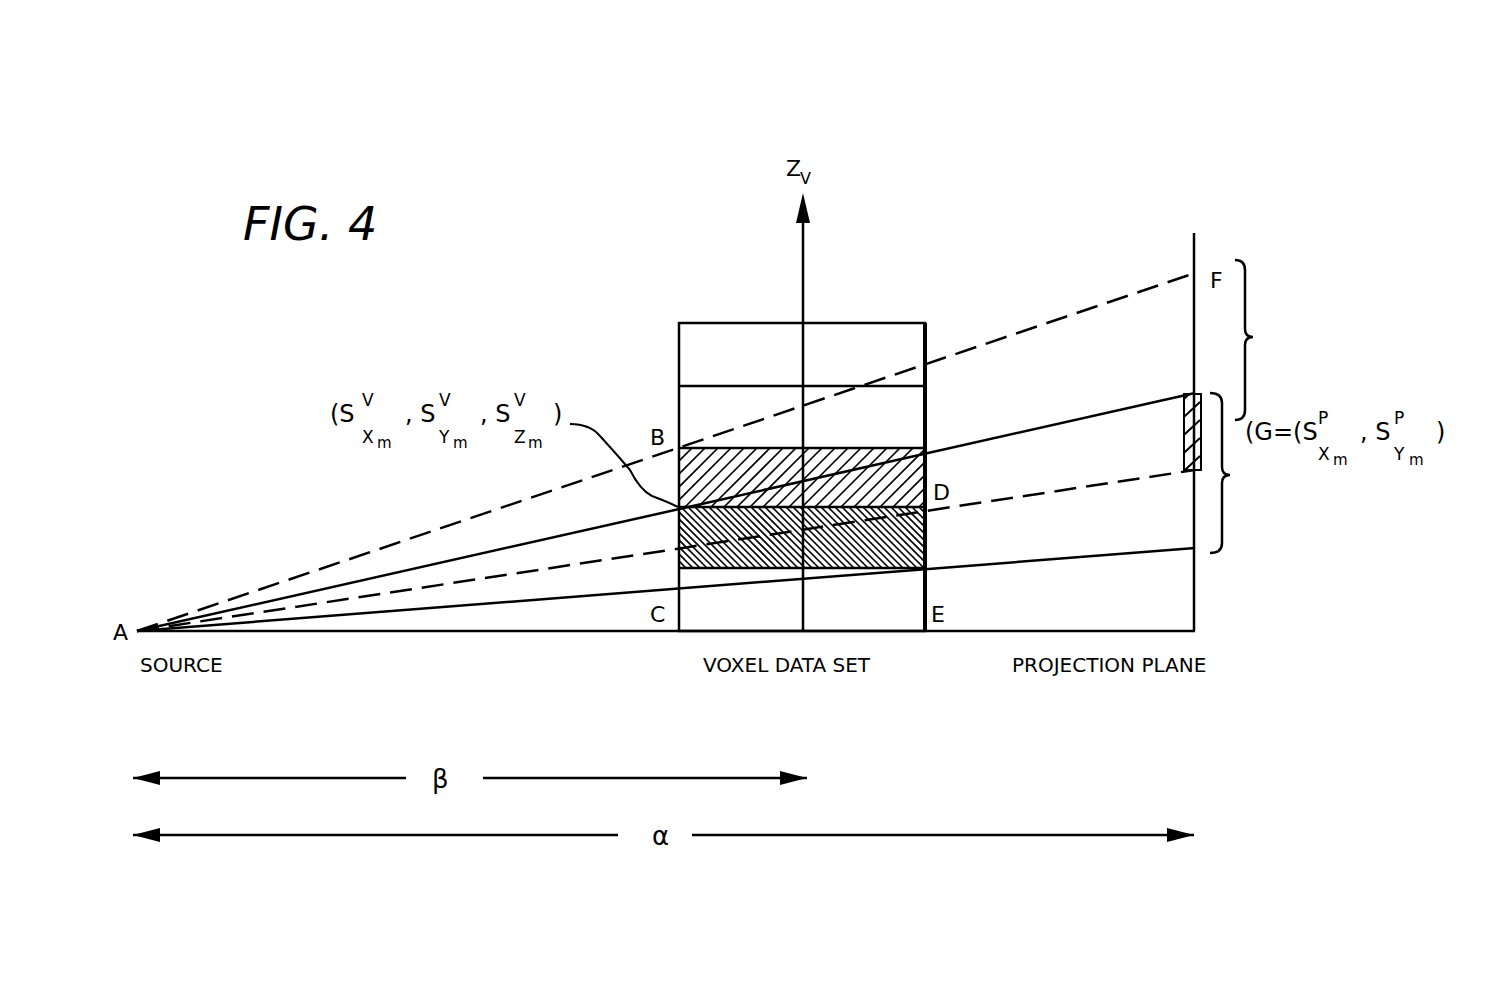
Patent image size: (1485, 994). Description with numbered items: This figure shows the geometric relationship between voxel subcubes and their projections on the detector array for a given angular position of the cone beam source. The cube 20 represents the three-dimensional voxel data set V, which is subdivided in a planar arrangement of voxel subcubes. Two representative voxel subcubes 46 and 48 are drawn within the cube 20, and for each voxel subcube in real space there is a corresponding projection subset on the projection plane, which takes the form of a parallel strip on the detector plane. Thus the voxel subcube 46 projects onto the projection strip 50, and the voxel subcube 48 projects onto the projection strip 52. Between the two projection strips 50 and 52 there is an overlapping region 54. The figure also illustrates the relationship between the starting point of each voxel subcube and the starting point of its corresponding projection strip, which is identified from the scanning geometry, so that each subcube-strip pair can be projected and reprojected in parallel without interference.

The cube 20 is at (850, 323).
The voxel subcube 46 is at (932, 466).
The voxel subcube 48 is at (930, 547).
The projection strip 50 is at (1266, 340).
The projection strip 52 is at (1241, 473).
The overlapping region 54 is at (1182, 410).